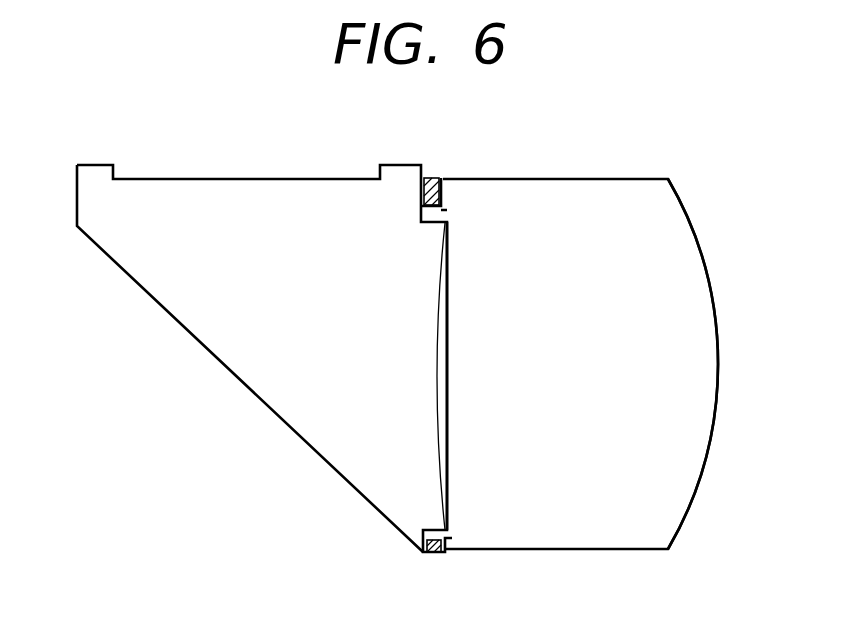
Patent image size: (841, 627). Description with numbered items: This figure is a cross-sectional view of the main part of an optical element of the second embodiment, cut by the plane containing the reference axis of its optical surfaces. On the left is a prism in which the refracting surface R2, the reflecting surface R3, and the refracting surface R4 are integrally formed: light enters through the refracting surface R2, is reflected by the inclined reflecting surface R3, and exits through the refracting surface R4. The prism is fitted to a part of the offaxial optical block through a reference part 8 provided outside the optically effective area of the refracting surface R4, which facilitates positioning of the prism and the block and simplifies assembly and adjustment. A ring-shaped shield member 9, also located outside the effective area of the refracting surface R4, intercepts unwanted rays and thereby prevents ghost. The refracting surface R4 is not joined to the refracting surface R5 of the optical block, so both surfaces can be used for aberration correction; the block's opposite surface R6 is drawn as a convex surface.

The refracting surface R2 is at (258, 178).
The reflecting surface R3 is at (211, 355).
The refracting surface R4 is at (436, 366).
The refracting surface R5 is at (455, 368).
The convex surface of lens R6 is at (720, 362).
The reference part 8 is at (433, 228).
The shield member 9 is at (432, 178).